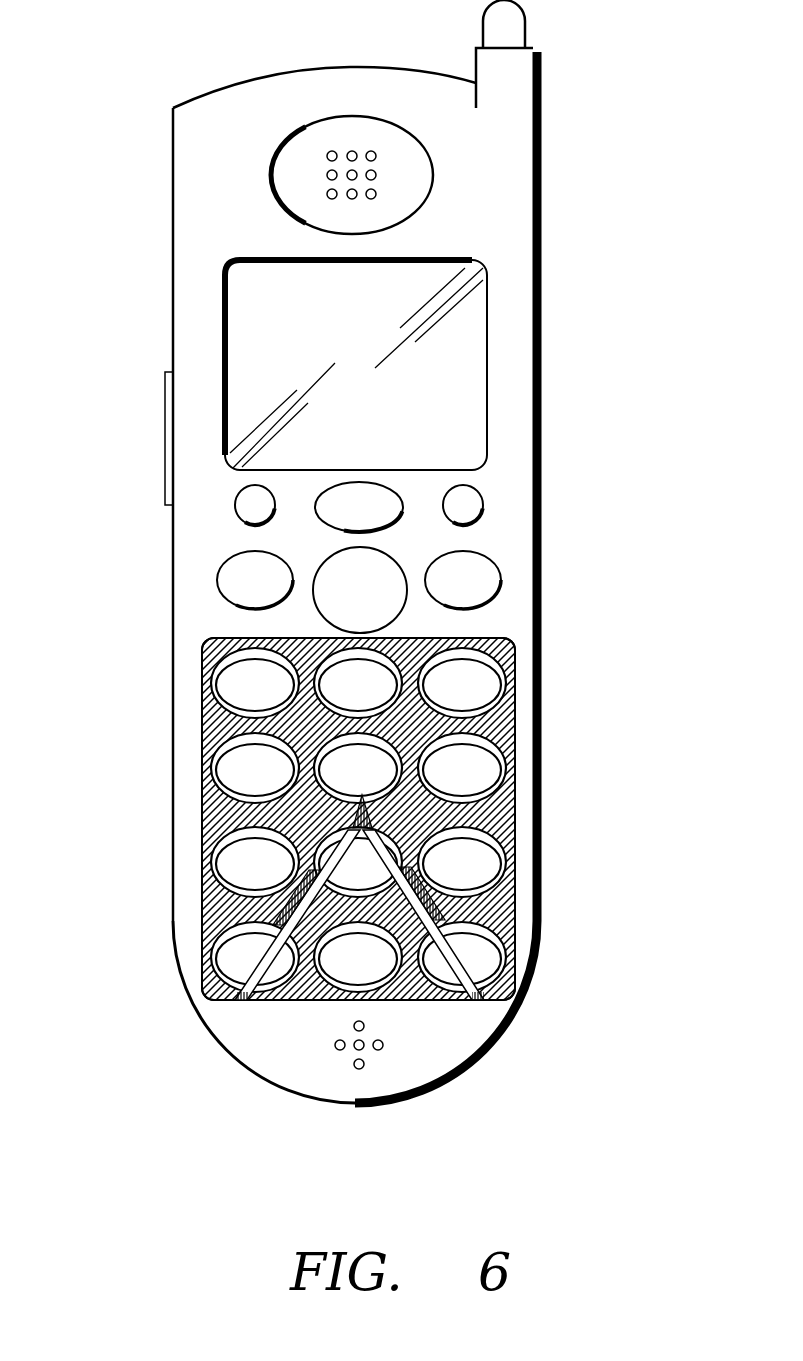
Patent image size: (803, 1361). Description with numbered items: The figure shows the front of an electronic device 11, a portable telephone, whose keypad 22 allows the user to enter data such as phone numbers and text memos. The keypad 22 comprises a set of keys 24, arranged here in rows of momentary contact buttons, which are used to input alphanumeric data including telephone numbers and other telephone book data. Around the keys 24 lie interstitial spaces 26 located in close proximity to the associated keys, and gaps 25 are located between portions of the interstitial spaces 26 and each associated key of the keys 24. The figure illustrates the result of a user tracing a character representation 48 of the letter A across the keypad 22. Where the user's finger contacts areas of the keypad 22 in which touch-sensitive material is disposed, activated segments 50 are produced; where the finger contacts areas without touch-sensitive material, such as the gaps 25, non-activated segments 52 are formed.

The electronic device 11 is at (113, 1050).
The keypad 22 is at (203, 645).
The keys 24 is at (490, 768).
The gaps 25 is at (503, 653).
The interstitial spaces 26 is at (262, 727).
The character representation 48 is at (478, 1000).
The activated segments 50 is at (353, 822).
The non-activated segments 52 is at (327, 862).